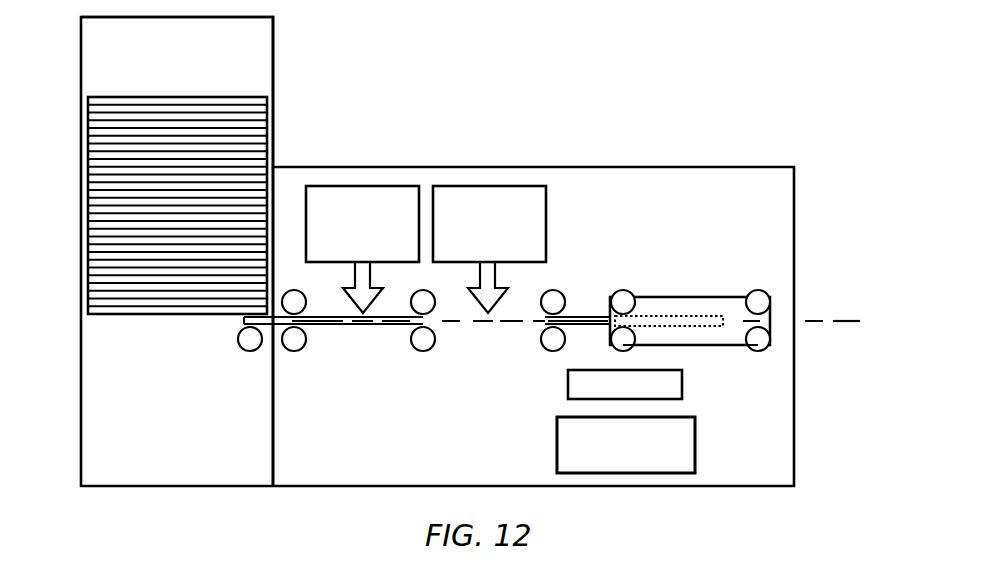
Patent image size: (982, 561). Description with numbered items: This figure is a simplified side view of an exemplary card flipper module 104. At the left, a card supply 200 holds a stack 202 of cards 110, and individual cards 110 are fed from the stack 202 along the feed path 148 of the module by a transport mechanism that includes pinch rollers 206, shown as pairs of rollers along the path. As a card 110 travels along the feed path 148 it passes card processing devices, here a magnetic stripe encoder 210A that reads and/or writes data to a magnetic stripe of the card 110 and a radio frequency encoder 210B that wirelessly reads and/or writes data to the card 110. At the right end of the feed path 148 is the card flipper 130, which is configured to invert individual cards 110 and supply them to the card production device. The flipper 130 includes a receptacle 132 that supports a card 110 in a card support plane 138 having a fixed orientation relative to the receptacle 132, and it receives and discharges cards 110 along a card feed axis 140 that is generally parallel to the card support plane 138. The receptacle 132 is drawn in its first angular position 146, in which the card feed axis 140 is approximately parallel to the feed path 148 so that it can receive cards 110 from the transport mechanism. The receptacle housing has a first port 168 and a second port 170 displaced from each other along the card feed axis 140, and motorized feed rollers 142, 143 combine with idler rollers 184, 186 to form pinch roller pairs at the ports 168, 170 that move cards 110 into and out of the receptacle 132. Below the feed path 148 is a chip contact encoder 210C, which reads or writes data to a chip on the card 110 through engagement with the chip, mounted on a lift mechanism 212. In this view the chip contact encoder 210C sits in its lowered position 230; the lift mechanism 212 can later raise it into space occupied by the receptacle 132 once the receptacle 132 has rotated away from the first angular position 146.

The card flipper module 104 is at (668, 60).
The card supply 200 is at (90, 33).
The stack 202 is at (88, 78).
The card 110 is at (95, 151).
The card support plane 138 is at (810, 320).
The feed path 148 is at (846, 320).
The magnetic stripe encoder 210A is at (356, 198).
The radio frequency encoder 210B is at (494, 204).
The pinch rollers 206 is at (294, 351).
The card flipper 130 is at (760, 257).
The first angular position 146 is at (705, 246).
The second port 170 is at (772, 330).
The idler roller 184 is at (618, 292).
The idler roller 186 is at (757, 297).
The feed roller 142 is at (620, 343).
The feed roller 143 is at (763, 350).
The first port 168 is at (610, 317).
The card feed axis 140 is at (693, 316).
The receptacle 132 is at (688, 340).
The chip contact encoder 210C is at (673, 387).
The lift mechanism 212 is at (563, 438).
The lowered position 230 is at (720, 409).